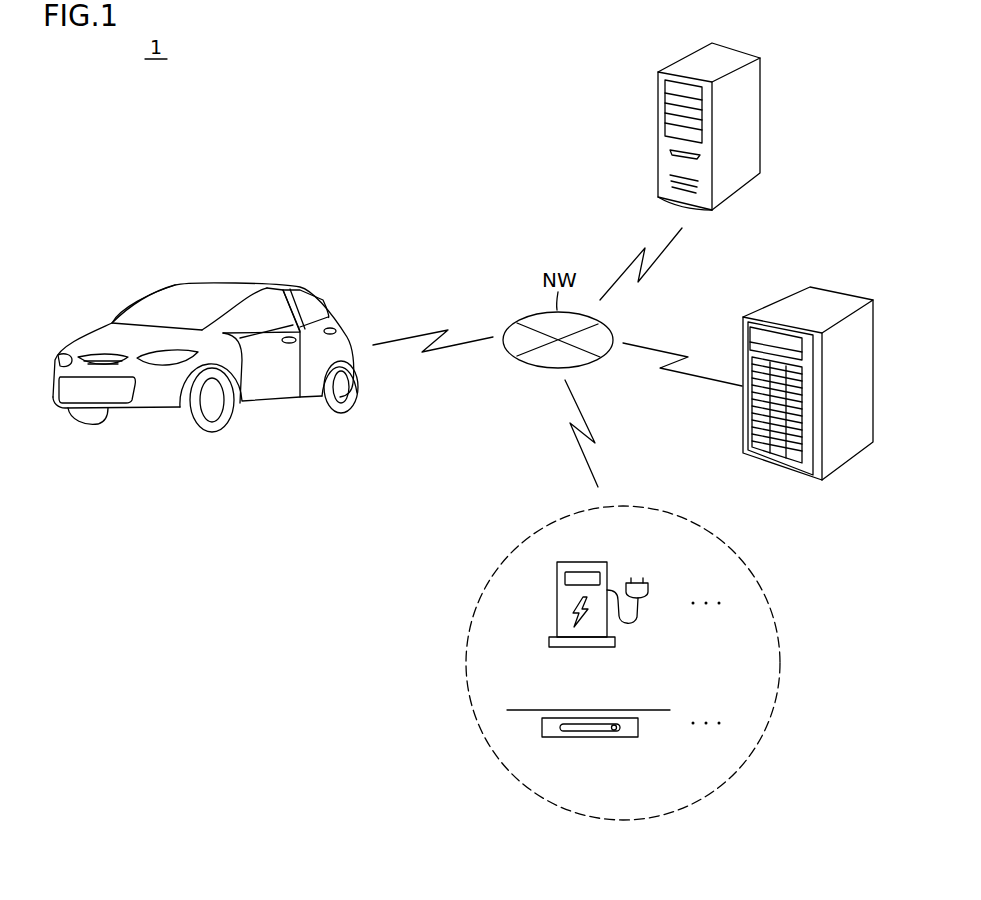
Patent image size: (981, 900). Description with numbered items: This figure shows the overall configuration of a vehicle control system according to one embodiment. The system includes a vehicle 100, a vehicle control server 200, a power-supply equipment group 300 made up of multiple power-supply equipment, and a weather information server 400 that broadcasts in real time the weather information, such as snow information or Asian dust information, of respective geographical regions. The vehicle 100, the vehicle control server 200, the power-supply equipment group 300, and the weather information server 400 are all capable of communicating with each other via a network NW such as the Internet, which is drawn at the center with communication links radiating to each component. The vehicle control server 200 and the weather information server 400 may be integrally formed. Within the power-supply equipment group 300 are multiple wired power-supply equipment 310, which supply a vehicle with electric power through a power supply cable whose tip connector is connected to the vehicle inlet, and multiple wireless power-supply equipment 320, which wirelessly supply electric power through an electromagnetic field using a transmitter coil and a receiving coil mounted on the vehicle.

The vehicle 100 is at (268, 286).
The vehicle control server 200 is at (727, 62).
The power-supply equipment group 300 is at (687, 517).
The wired power-supply equipment 310 is at (595, 560).
The wireless power-supply equipment 320 is at (610, 738).
The weather information server 400 is at (843, 292).